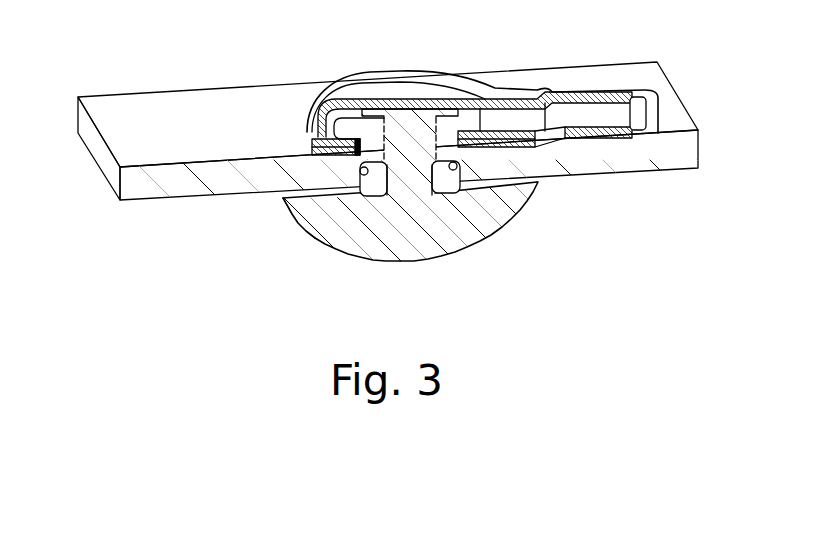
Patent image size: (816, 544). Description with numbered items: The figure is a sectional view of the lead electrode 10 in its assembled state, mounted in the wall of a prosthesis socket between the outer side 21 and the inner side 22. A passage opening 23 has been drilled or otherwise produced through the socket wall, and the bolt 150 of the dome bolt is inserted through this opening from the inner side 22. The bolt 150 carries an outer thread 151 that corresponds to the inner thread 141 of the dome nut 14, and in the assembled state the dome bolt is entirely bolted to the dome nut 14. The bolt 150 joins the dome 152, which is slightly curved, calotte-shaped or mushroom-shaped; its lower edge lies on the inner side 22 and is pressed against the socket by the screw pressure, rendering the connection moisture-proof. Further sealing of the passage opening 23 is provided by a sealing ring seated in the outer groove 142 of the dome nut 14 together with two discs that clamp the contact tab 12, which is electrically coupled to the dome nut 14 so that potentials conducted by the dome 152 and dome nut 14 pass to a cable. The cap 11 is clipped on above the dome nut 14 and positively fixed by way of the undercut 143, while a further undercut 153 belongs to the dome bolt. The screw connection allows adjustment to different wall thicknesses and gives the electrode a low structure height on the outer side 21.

The lead electrode 10 is at (424, 177).
The cap 11 is at (424, 76).
The contact tab 12 is at (517, 184).
The dome nut 14 is at (362, 118).
The inner thread 141 is at (366, 114).
The groove 142 is at (352, 185).
The undercut 143 is at (328, 136).
The bolt 150 is at (413, 172).
The outer thread 151 is at (450, 185).
The dome 152 is at (367, 247).
The undercut 153 is at (283, 201).
The outer side 21 is at (128, 108).
The inner side 22 is at (155, 214).
The passage opening 23 is at (470, 115).